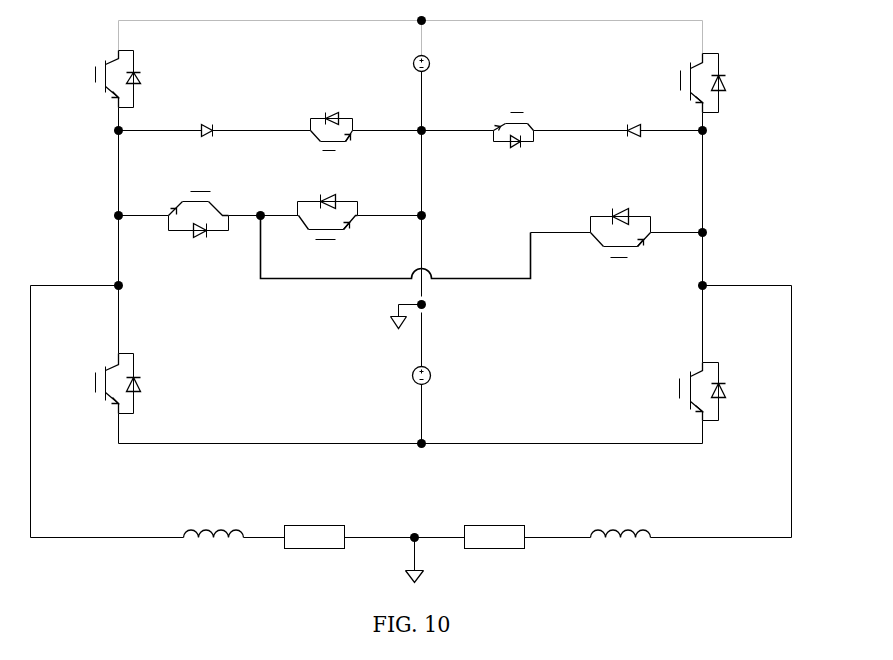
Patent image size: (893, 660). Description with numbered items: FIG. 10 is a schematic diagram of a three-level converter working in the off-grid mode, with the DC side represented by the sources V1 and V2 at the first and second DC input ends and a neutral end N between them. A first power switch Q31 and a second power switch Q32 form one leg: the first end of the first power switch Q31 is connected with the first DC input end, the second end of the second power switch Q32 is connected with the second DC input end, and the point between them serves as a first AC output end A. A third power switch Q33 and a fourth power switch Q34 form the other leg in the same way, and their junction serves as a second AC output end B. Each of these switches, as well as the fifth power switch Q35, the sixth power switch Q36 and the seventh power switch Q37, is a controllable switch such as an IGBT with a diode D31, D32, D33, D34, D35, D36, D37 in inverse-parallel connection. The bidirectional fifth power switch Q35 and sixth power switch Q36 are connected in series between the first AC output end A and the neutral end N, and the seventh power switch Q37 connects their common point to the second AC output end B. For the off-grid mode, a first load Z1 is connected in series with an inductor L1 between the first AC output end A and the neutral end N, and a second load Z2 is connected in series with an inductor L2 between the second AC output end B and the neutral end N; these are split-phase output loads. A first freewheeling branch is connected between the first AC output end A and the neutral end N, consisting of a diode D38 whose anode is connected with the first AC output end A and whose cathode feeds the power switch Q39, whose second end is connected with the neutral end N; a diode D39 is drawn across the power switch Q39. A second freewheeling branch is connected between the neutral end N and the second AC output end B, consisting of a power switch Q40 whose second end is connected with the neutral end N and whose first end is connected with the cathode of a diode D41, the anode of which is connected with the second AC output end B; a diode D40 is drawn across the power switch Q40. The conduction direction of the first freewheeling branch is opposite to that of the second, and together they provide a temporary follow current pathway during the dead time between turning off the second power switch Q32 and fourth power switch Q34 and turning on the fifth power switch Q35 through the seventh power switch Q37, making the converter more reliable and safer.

The first power switch Q31 is at (95, 74).
The diode D31 is at (144, 79).
The second power switch Q32 is at (95, 381).
The diode D32 is at (144, 384).
The third power switch Q33 is at (680, 80).
The diode D33 is at (728, 83).
The fourth power switch Q34 is at (679, 388).
The diode D34 is at (728, 392).
The fifth power switch Q35 is at (200, 191).
The diode D35 is at (199, 240).
The sixth power switch Q36 is at (325, 239).
The diode D36 is at (328, 199).
The seventh power switch Q37 is at (618, 257).
The diode D37 is at (621, 214).
The diode D38 is at (209, 121).
The power switch Q39 is at (328, 162).
The diode D39 is at (332, 114).
The power switch Q40 is at (516, 98).
The diode D40 is at (514, 150).
The diode D41 is at (634, 119).
The first DC voltage source V1 is at (408, 64).
The second DC voltage source V2 is at (408, 376).
The inductor L1 is at (214, 516).
The inductor L2 is at (621, 513).
The first load Z1 is at (315, 522).
The second load Z2 is at (495, 522).
The first AC output end A is at (112, 221).
The second AC output end B is at (695, 243).
The neutral end N is at (420, 440).